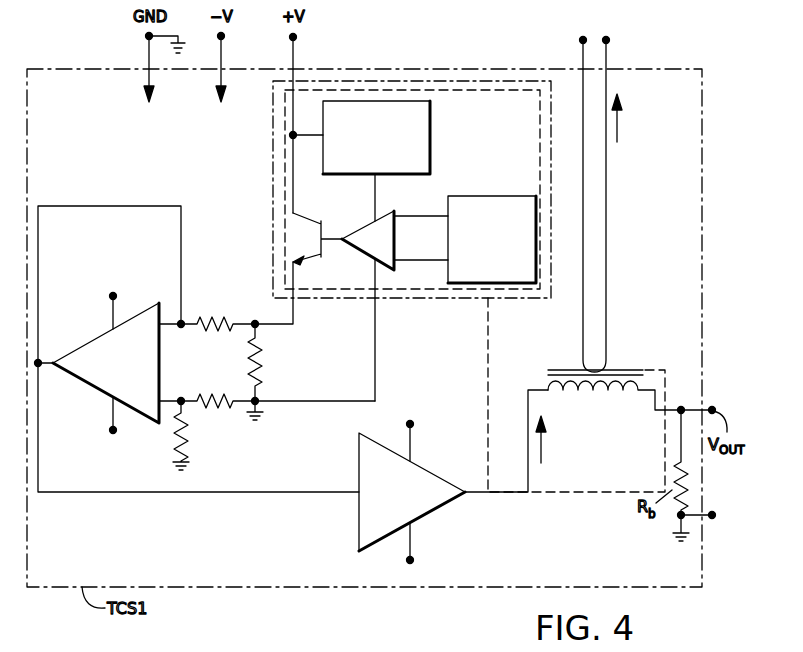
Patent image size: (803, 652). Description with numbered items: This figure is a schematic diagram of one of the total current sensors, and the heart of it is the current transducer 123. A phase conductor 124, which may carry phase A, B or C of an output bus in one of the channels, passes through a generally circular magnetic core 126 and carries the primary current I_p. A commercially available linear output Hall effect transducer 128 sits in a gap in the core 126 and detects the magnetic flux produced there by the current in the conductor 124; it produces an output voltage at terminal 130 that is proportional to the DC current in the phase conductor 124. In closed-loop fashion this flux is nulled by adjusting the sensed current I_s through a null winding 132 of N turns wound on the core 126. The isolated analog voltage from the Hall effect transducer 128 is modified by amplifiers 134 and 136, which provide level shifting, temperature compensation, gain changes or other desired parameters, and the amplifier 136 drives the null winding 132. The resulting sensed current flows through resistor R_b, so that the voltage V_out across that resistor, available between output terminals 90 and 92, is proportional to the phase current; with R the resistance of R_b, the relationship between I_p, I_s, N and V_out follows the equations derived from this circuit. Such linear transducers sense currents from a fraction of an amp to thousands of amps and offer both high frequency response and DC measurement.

The output terminal 90 is at (713, 410).
The output terminal 92 is at (713, 515).
The current transducer 123 is at (545, 492).
The phase conductor 124 is at (606, 158).
The magnetic core 126 is at (643, 372).
The linear output Hall effect transducer 128 is at (283, 160).
The terminal 130 is at (256, 318).
The null winding 132 is at (597, 390).
The amplifier 134 is at (95, 388).
The amplifier 136 is at (436, 508).